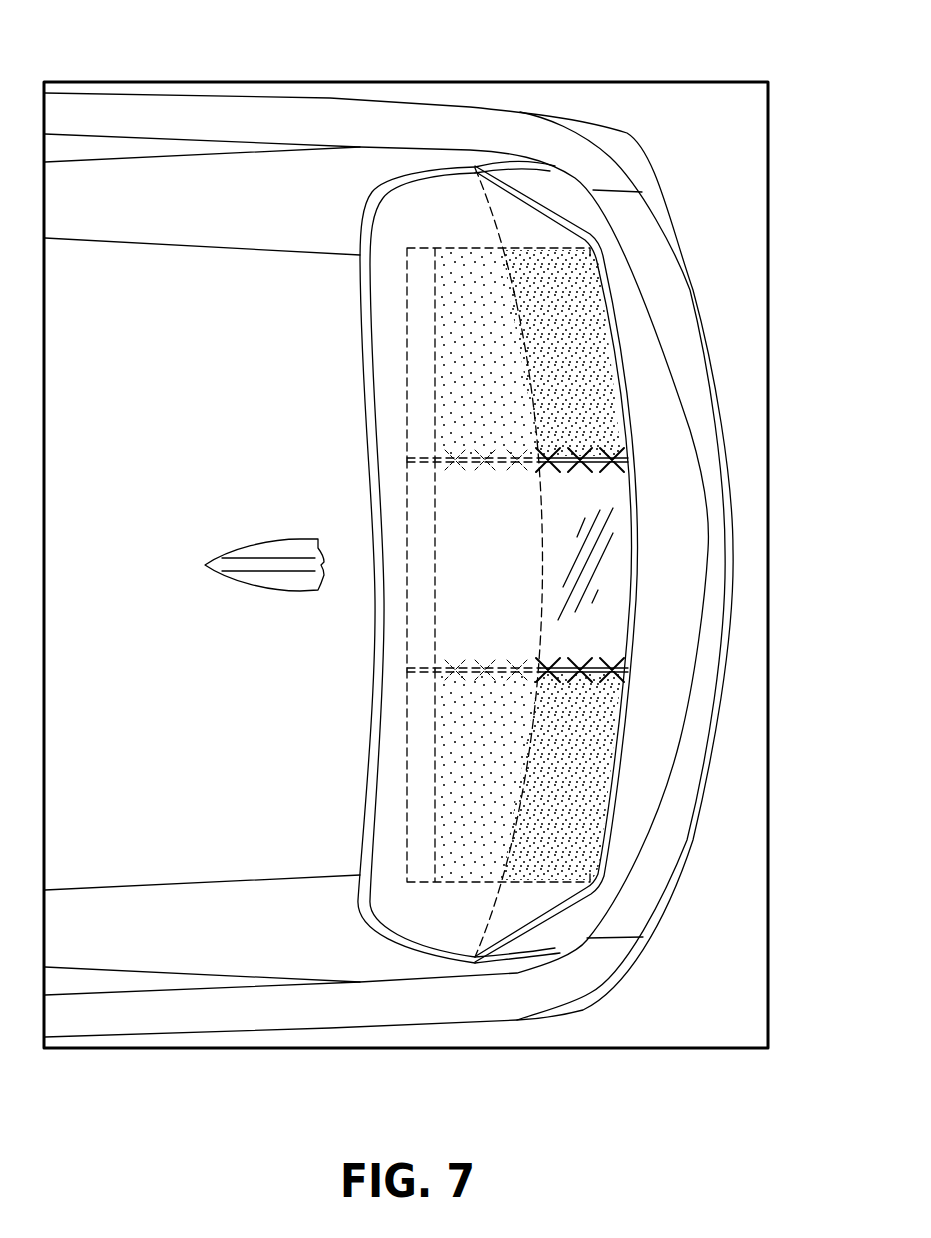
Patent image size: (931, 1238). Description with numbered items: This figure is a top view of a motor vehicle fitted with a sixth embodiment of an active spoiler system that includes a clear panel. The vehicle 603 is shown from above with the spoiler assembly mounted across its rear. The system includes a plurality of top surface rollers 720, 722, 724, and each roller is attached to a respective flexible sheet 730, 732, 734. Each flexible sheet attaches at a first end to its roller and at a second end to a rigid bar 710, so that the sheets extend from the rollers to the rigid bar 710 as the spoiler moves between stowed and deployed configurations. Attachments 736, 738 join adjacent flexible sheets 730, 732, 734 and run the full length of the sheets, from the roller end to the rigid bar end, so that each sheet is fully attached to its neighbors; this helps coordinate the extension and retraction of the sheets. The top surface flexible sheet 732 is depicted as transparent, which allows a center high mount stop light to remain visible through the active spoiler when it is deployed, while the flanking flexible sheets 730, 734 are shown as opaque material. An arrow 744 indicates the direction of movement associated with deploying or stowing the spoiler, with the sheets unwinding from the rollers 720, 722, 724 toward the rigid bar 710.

The vehicle 603 is at (697, 113).
The rigid bar 710 is at (625, 367).
The top surface roller 720 is at (405, 778).
The top surface roller 722 is at (405, 600).
The top surface roller 724 is at (405, 368).
The flexible sheet 730 is at (580, 760).
The top surface flexible sheet 732 is at (613, 598).
The flexible sheet 734 is at (582, 404).
The attachment 736 is at (608, 660).
The attachment 738 is at (608, 468).
The rotation direction 744 is at (446, 530).